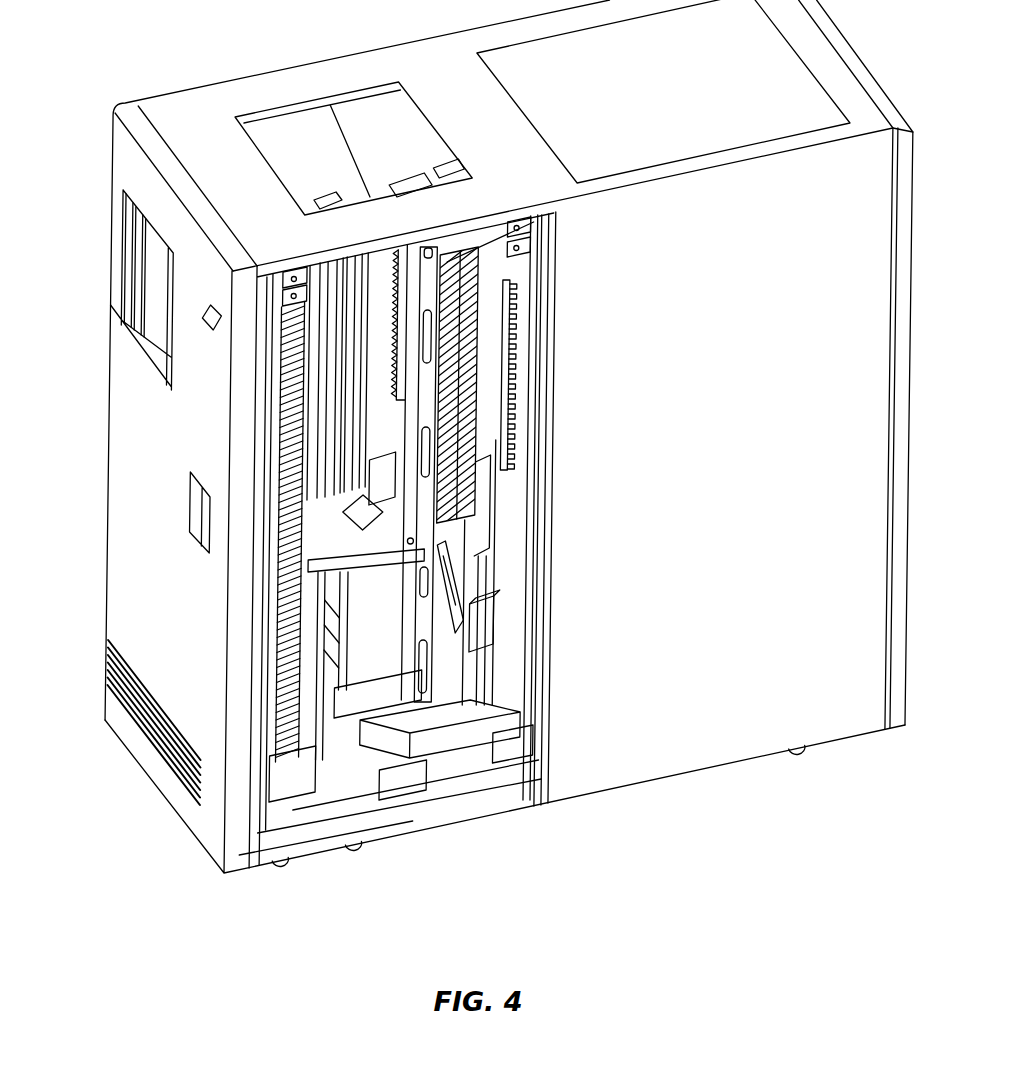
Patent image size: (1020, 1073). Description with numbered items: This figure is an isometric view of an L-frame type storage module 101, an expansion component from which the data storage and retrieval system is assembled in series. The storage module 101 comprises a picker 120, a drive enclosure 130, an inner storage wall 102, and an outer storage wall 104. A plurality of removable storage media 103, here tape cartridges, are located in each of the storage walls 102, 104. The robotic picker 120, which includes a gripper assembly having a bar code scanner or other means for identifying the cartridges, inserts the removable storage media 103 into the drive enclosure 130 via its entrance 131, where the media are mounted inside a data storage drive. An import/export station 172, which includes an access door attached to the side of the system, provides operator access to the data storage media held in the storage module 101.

The storage module 101 is at (220, 104).
The import/export station 172 is at (160, 273).
The inner storage wall 102 is at (487, 347).
The removable storage media 103 is at (457, 417).
The picker 120 is at (378, 568).
The entrance 131 is at (447, 593).
The drive enclosure 130 is at (482, 620).
The outer storage wall 104 is at (293, 737).